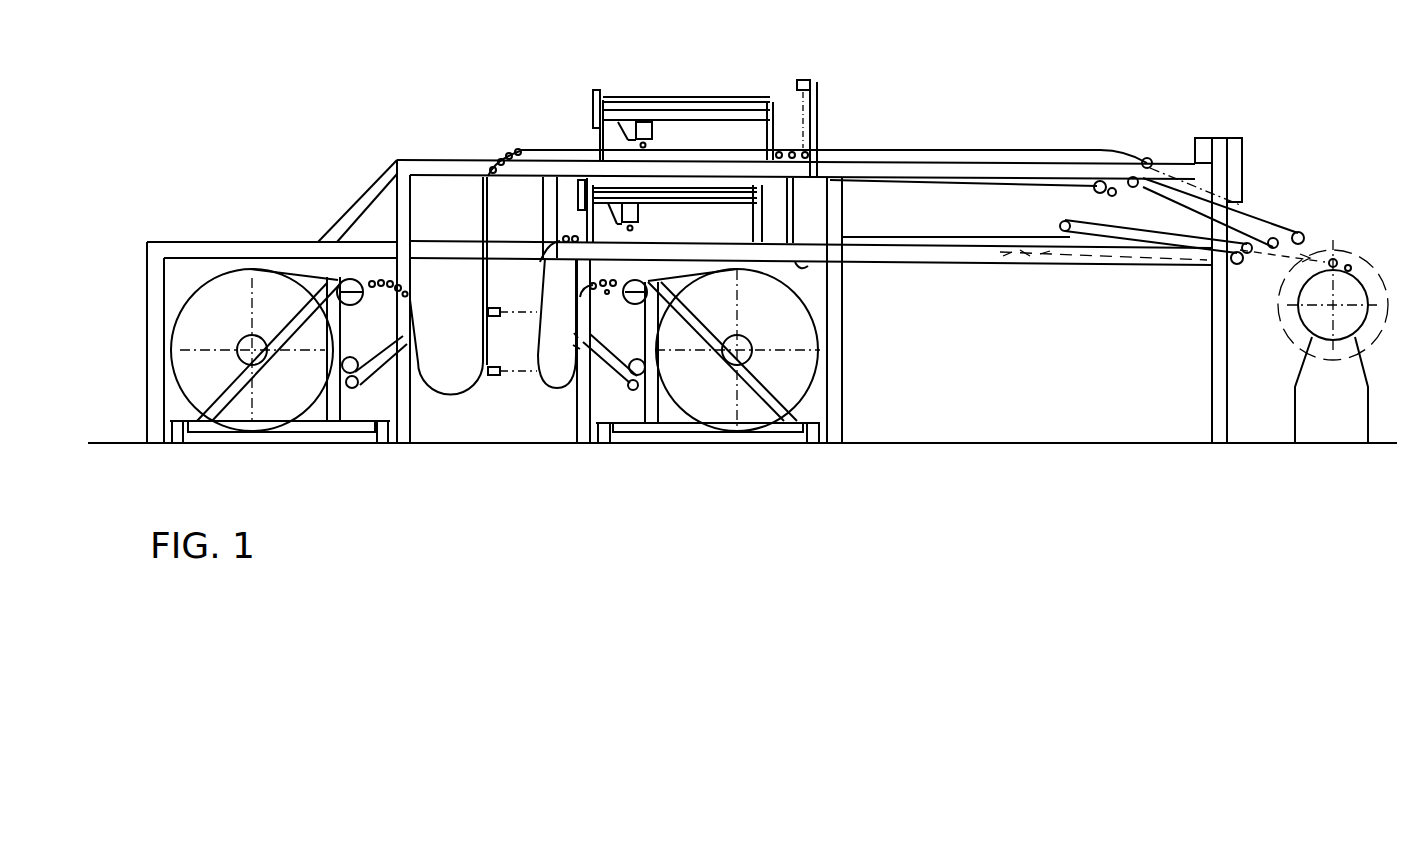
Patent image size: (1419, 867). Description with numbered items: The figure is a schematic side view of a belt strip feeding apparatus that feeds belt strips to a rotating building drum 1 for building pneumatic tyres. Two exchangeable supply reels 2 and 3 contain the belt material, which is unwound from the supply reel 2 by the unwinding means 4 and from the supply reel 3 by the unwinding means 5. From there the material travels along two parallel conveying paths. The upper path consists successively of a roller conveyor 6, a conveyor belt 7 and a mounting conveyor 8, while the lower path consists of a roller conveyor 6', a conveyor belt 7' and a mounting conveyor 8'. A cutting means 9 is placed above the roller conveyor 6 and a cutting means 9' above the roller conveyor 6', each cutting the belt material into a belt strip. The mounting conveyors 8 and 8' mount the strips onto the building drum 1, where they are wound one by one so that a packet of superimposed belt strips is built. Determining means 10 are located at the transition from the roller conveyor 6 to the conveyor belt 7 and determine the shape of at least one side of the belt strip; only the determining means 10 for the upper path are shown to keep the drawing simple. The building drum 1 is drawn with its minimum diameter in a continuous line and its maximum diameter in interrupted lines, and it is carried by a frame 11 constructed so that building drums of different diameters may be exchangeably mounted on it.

The building drum 1 is at (1357, 315).
The supply reel 2 is at (228, 296).
The supply reel 3 is at (793, 330).
The unwinding means 4 is at (363, 308).
The unwinding means 5 is at (607, 297).
The roller conveyor 6 is at (820, 118).
The roller conveyor 6' is at (943, 209).
The conveyor belt 7 is at (1078, 187).
The conveyor belt 7' is at (1082, 272).
The mounting conveyor 8 is at (1216, 210).
The mounting conveyor 8' is at (1234, 237).
The cutting means 9 is at (683, 106).
The cutting means 9' is at (670, 210).
The determining means 10 is at (805, 78).
The frame 11 is at (1347, 417).